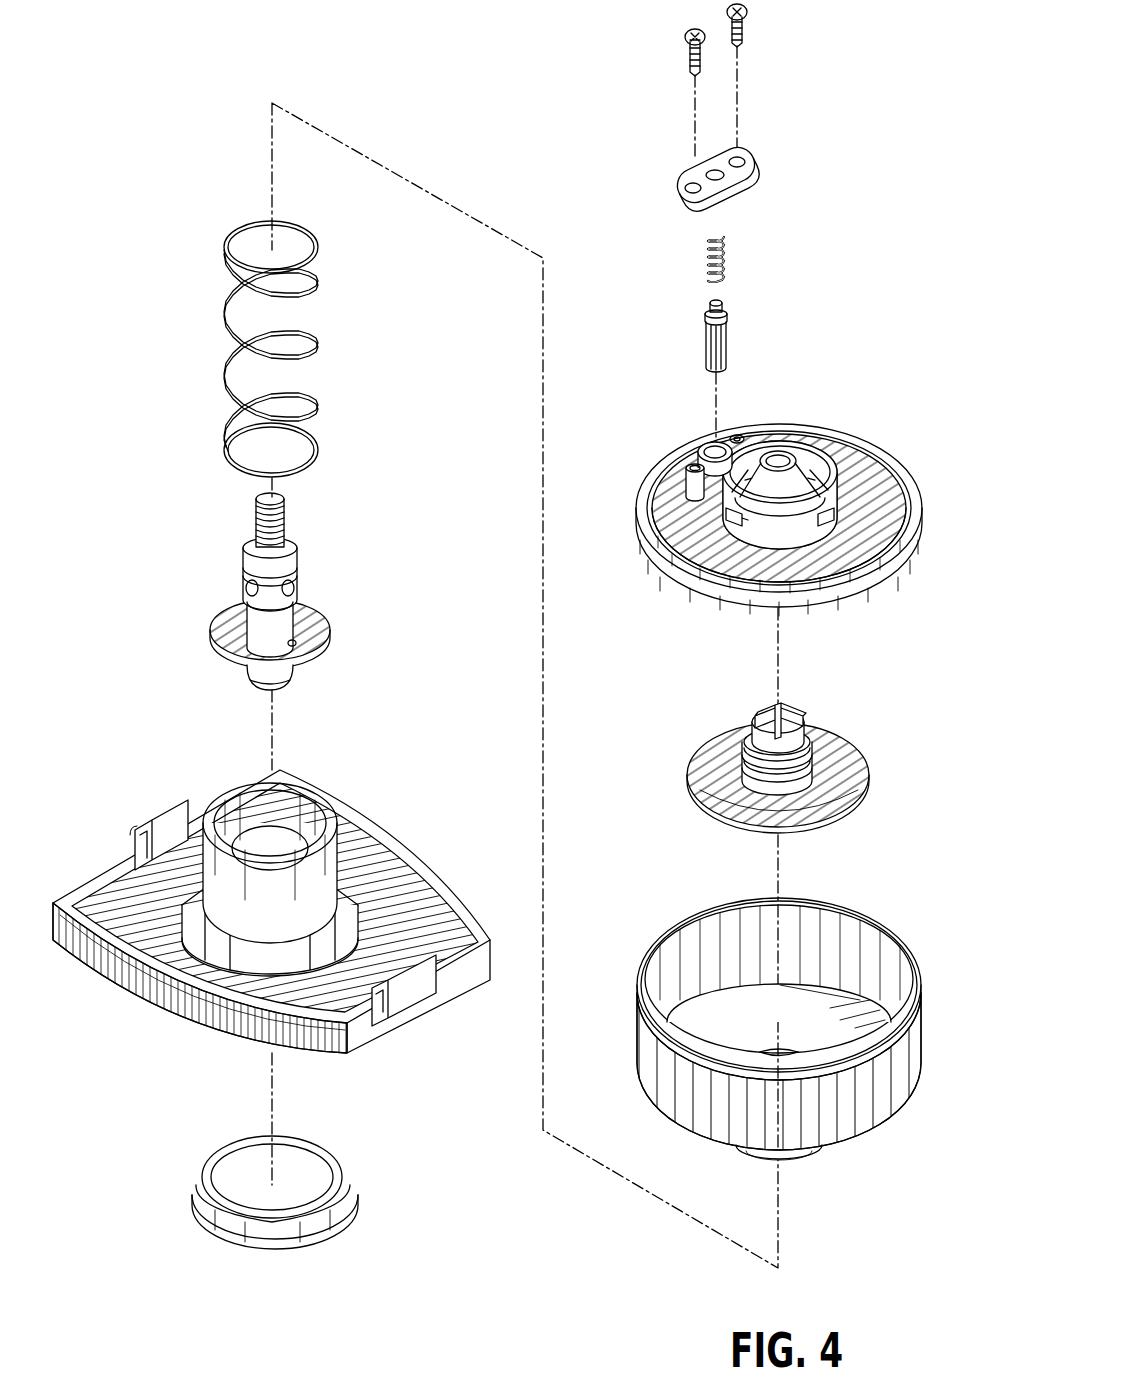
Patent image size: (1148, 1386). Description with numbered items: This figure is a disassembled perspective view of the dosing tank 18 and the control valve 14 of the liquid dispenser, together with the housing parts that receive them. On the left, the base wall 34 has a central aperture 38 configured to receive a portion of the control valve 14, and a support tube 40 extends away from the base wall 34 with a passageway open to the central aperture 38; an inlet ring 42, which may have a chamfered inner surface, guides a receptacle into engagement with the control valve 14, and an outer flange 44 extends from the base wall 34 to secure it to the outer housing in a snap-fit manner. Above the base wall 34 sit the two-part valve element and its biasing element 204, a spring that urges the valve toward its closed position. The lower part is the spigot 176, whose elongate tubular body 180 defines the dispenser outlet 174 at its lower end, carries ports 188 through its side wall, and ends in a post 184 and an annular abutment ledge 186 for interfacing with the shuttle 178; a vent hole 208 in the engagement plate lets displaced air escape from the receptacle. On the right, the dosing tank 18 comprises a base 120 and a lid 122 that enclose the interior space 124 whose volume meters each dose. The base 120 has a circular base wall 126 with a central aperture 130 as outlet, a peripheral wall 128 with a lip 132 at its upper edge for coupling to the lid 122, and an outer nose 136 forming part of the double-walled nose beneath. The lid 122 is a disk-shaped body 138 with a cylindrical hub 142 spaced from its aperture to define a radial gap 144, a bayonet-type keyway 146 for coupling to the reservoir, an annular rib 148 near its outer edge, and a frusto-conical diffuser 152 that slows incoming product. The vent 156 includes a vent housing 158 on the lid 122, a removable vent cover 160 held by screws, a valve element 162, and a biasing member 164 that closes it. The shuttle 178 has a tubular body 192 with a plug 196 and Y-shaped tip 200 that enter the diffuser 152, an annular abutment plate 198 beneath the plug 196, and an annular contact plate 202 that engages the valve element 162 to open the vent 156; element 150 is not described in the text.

The control valve 14 is at (272, 602).
The dosing tank 18 is at (758, 1026).
The base wall 34 is at (268, 914).
The central aperture 38 is at (230, 920).
The support tube 40 is at (245, 972).
The inlet ring 42 is at (200, 1196).
The outer flange 44 is at (410, 844).
The base 120 is at (758, 1030).
The lid 122 is at (766, 502).
The interior space 124 is at (779, 965).
The base wall 126 is at (815, 992).
The peripheral wall 128 is at (659, 1100).
The central aperture 130 is at (775, 1050).
The lip 132 is at (899, 929).
The outer nose 136 is at (762, 1156).
The disk-shaped body 138 is at (766, 519).
The cylindrical hub 142 is at (842, 456).
The radial gap 144 is at (765, 502).
The keyway 146 is at (733, 515).
The annular rib 148 is at (914, 488).
The central opening 150 is at (786, 453).
The diffuser 152 is at (778, 453).
The vent 156 is at (742, 193).
The vent housing 158 is at (710, 445).
The vent cover 160 is at (748, 166).
The valve element 162 is at (706, 340).
The biasing member 164 is at (725, 253).
The dispenser outlet 174 is at (256, 688).
The spigot 176 is at (232, 659).
The shuttle 178 is at (765, 744).
The elongate tubular body 180 is at (314, 646).
The post 184 is at (257, 522).
The annular abutment ledge 186 is at (264, 560).
The ports 188 is at (247, 584).
The tubular body 192 is at (825, 776).
The plug 196 is at (777, 704).
The annular abutment plate 198 is at (812, 736).
The Y-shaped tip 200 is at (795, 706).
The annular contact plate 202 is at (845, 749).
The biasing element 204 is at (318, 340).
The vent hole 208 is at (297, 646).